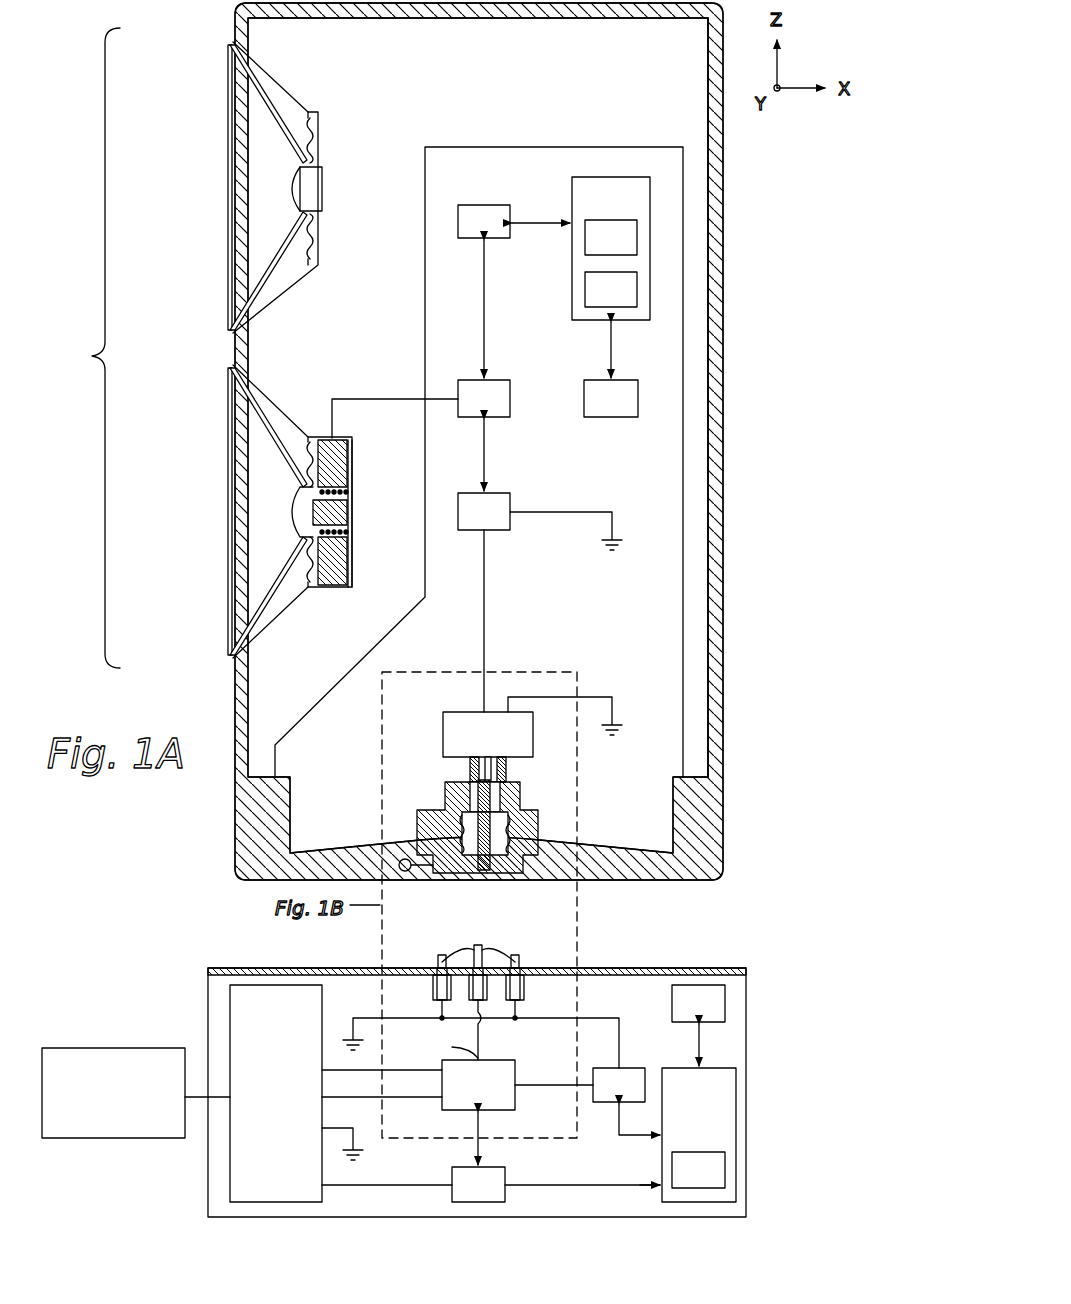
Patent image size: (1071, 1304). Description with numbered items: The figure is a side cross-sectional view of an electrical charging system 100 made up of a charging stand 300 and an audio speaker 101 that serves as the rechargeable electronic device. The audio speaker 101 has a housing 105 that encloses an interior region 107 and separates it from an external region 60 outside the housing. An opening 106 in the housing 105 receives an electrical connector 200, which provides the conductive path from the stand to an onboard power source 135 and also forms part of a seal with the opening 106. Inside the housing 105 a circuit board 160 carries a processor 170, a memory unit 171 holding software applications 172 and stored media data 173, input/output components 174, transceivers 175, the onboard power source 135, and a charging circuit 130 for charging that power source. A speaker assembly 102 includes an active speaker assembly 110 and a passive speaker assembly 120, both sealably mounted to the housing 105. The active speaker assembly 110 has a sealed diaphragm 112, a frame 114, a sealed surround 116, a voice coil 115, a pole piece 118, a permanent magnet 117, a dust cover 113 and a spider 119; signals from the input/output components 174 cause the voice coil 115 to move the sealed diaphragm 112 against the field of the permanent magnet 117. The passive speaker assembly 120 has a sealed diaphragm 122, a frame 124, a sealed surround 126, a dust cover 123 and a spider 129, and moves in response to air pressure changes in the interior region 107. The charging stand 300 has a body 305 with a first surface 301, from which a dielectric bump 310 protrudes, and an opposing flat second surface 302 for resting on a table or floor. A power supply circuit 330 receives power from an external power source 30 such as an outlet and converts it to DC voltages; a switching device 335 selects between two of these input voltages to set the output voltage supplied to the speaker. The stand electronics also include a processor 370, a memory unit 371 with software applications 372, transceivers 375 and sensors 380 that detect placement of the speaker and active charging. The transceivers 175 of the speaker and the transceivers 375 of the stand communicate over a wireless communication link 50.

The external power source 30 is at (72, 1048).
The wireless communication link 50 is at (765, 1010).
The external region 60 is at (813, 512).
The electrical charging system 100 is at (765, 327).
The audio speaker 101 is at (200, 828).
The speaker assembly 102 is at (83, 348).
The housing 105 is at (723, 195).
The opening 106 is at (477, 880).
The interior region 107 is at (393, 221).
The active speaker assembly 110 is at (272, 518).
The sealed diaphragm 112 is at (266, 592).
The dust cover 113 is at (275, 502).
The frame 114 is at (278, 618).
The voice coil 115 is at (349, 492).
The sealed surround 116 is at (228, 655).
The permanent magnet 117 is at (338, 587).
The pole piece 118 is at (349, 520).
The spider 119 is at (300, 437).
The passive speaker assembly 120 is at (235, 187).
The sealed diaphragm 122 is at (266, 268).
The dust cover 123 is at (279, 178).
The frame 124 is at (278, 290).
The sealed surround 126 is at (228, 330).
The spider 129 is at (300, 133).
The charging circuit 130 is at (467, 744).
The onboard power source 135 is at (469, 523).
The circuit board 160 is at (605, 147).
The processor 170 is at (469, 233).
The memory unit 171 is at (596, 206).
The software applications 172 is at (596, 249).
The stored media data 173 is at (596, 301).
The input/output components 174 is at (469, 410).
The transceivers 175 is at (596, 410).
The electrical connector 200 is at (432, 870).
The charging stand 300 is at (430, 1076).
The first surface 301 is at (360, 968).
The second surface 302 is at (360, 1217).
The body 305 is at (580, 1210).
The bump 310 is at (496, 950).
The power supply circuit 330 is at (259, 1027).
The switching device 335 is at (461, 1095).
The processor 370 is at (461, 1196).
The memory unit 371 is at (682, 1116).
The software applications 372 is at (682, 1181).
The transceivers 375 is at (682, 1015).
The sensors 380 is at (602, 1096).